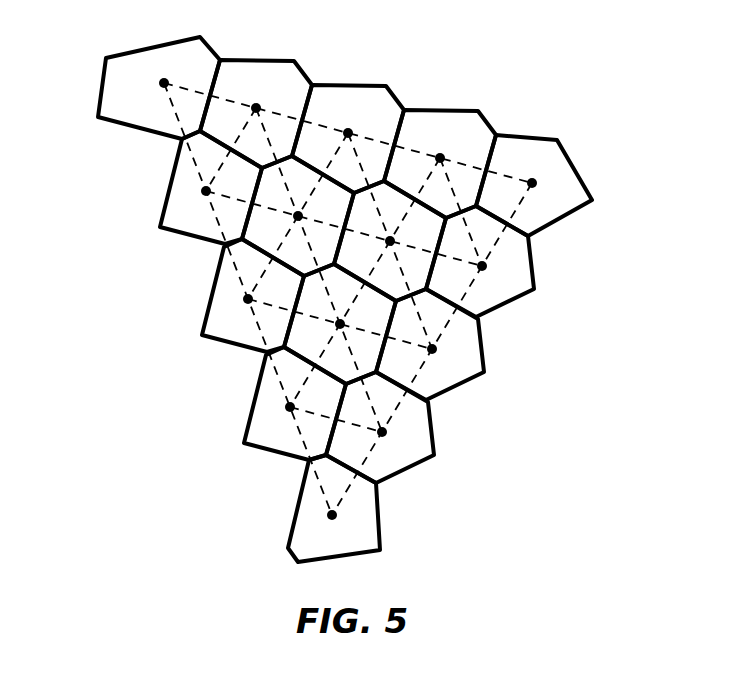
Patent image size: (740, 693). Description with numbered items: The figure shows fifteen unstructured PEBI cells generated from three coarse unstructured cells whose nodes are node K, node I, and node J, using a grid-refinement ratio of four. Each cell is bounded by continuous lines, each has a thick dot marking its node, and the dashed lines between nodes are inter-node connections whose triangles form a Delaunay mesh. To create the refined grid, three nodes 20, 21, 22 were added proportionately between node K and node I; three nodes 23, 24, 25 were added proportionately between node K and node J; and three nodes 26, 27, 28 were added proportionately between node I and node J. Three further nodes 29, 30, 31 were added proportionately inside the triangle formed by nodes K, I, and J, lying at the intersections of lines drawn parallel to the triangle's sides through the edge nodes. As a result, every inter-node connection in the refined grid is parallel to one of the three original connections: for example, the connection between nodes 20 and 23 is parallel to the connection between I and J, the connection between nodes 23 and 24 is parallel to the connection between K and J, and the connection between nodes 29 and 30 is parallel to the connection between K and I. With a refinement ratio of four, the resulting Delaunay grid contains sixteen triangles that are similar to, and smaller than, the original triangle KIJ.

The node K is at (164, 83).
The node 20 is at (256, 108).
The node 21 is at (348, 133).
The node 22 is at (440, 158).
The node I is at (532, 183).
The node 23 is at (206, 191).
The node 29 is at (298, 216).
The node 30 is at (390, 241).
The node 26 is at (482, 266).
The node 24 is at (248, 299).
The node 31 is at (340, 324).
The node 27 is at (432, 349).
The node 25 is at (290, 407).
The node 28 is at (382, 432).
The node J is at (332, 515).